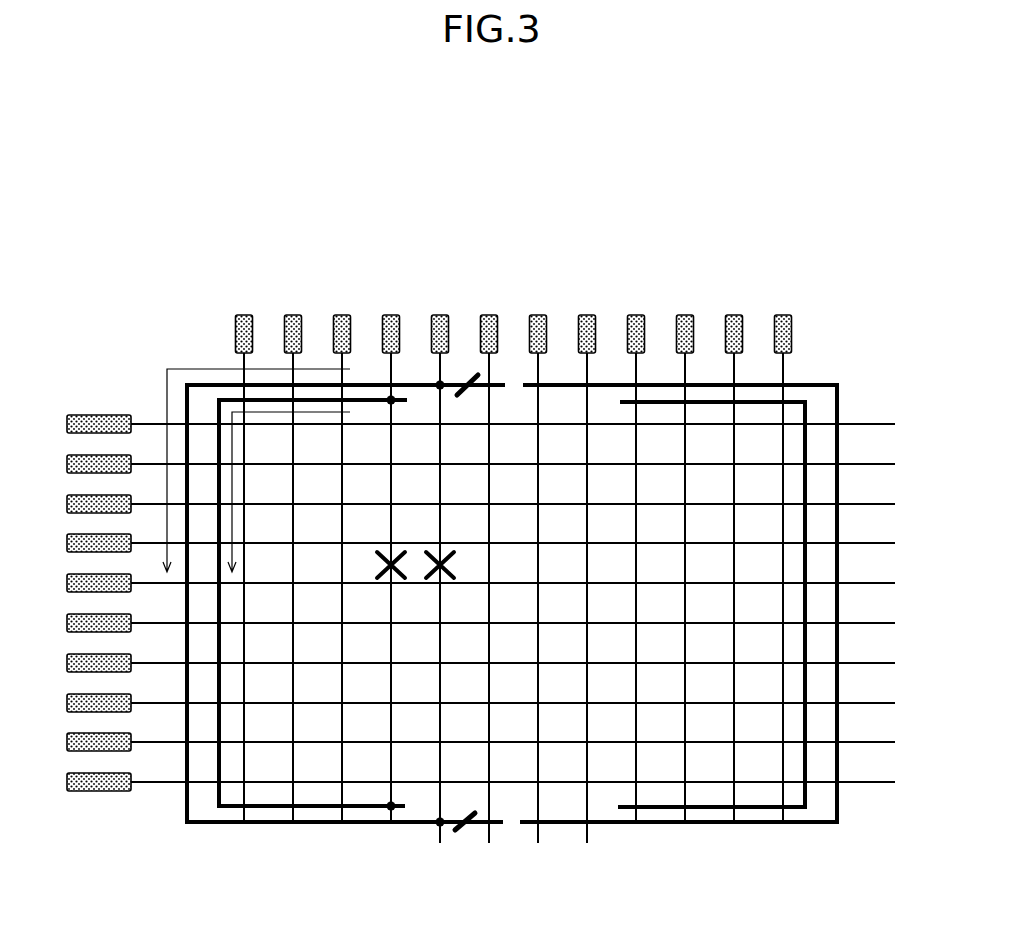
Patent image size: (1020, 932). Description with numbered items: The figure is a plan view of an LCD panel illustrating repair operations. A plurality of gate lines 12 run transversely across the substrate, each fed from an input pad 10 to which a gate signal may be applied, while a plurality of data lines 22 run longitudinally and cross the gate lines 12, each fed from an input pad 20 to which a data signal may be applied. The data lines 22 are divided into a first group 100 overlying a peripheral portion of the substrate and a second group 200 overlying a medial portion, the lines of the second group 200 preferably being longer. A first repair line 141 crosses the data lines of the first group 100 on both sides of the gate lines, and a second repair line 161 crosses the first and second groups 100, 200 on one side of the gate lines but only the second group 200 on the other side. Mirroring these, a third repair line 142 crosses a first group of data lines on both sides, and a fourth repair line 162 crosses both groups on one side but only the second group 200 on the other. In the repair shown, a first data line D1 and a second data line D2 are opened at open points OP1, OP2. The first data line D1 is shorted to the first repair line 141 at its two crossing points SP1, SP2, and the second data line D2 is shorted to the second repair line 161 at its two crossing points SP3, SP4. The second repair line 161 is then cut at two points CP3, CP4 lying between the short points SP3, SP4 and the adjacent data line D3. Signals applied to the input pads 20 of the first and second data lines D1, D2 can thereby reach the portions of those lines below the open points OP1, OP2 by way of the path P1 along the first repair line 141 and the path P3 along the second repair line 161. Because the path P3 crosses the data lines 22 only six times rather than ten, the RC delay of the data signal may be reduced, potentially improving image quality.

The input pad 10 is at (100, 415).
The gate line 12 is at (152, 420).
The input pad 20 is at (235, 326).
The data line 22 is at (244, 357).
The first group 100 is at (400, 305).
The second group 200 is at (596, 306).
The first repair line 141 is at (208, 801).
The third repair line 142 is at (817, 805).
The second repair line 161 is at (179, 829).
The fourth repair line 162 is at (846, 831).
The path P1 is at (289, 492).
The path P3 is at (242, 470).
The first data line D1 is at (391, 368).
The second data line D2 is at (440, 363).
The adjacent data line D3 is at (489, 368).
The crossing point SP1 is at (388, 405).
The crossing point SP2 is at (388, 811).
The crossing point SP3 is at (443, 390).
The crossing point SP4 is at (437, 827).
The cut point CP3 is at (476, 383).
The cut point CP4 is at (473, 824).
The open point OP1 is at (378, 576).
The open point OP2 is at (452, 576).